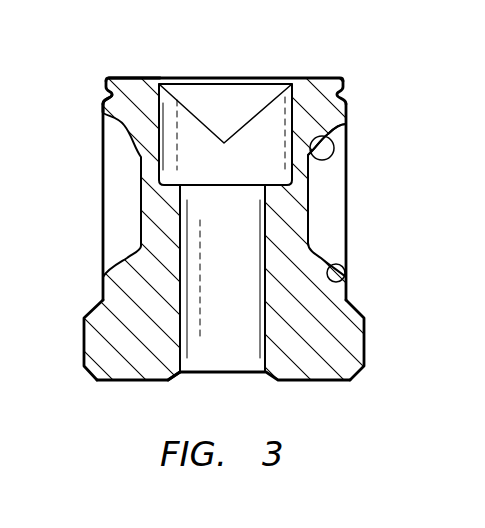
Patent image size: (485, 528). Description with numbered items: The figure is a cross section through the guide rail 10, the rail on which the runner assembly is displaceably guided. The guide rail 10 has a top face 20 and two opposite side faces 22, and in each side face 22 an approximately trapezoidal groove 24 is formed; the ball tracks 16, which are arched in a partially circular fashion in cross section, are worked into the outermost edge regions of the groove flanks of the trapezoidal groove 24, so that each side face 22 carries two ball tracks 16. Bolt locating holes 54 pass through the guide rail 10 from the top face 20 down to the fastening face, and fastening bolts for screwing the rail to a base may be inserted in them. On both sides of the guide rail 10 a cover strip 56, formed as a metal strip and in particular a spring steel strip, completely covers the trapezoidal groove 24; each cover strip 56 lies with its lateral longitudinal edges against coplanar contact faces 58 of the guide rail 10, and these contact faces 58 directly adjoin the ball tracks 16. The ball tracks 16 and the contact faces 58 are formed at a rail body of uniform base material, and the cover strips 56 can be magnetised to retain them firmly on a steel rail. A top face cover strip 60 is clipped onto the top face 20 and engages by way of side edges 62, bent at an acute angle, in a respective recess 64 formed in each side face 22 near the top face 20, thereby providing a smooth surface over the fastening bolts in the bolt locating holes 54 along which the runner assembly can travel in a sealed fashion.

The guide rail 10 is at (320, 372).
The ball tracks 16 is at (308, 158).
The top face 20 is at (137, 78).
The side faces 22 is at (364, 337).
The trapezoidal groove 24 is at (335, 187).
The bolt locating holes 54 is at (180, 364).
The cover strips 56 is at (103, 253).
The contact faces 58 is at (341, 122).
The top face cover strip 60 is at (254, 78).
The side edges 62 is at (106, 80).
The recess 64 is at (103, 100).